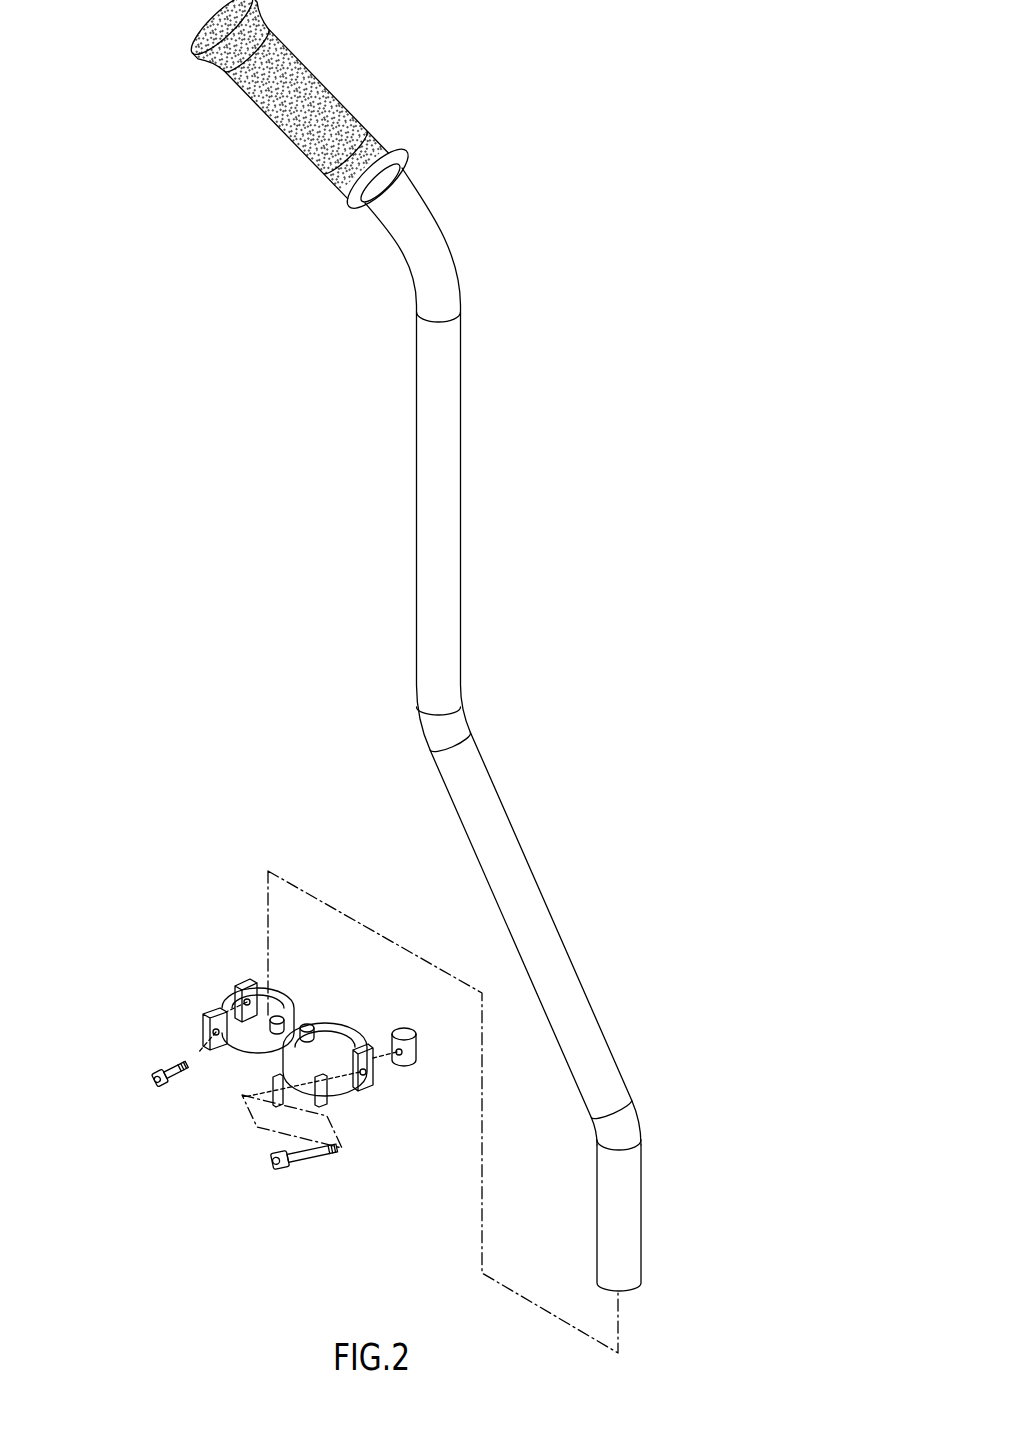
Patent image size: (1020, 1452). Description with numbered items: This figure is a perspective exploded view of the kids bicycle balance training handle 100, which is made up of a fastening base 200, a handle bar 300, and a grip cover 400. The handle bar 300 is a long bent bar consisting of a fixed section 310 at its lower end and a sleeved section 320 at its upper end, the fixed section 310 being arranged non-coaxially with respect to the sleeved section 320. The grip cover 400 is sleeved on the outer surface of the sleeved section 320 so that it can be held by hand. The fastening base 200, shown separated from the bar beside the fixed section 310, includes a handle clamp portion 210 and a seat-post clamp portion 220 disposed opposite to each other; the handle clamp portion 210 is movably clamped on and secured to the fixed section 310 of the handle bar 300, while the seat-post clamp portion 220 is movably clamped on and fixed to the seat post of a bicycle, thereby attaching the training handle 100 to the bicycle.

The kids bicycle balance training handle 100 is at (577, 410).
The fastening base 200 is at (198, 1097).
The handle clamp portion 210 is at (195, 985).
The seat-post clamp portion 220 is at (378, 1110).
The handle bar 300 is at (543, 790).
The fixed section 310 is at (632, 1215).
The sleeved section 320 is at (395, 188).
The grip cover 400 is at (337, 113).